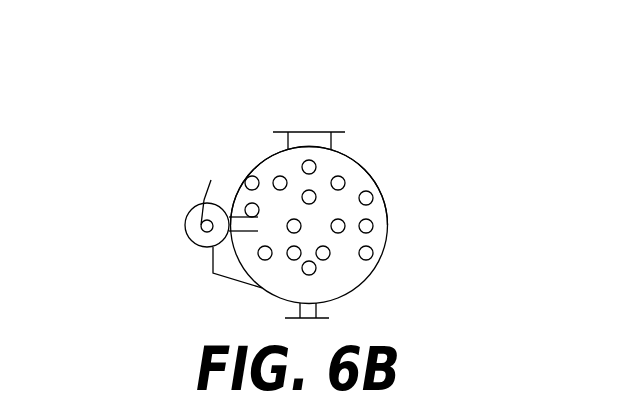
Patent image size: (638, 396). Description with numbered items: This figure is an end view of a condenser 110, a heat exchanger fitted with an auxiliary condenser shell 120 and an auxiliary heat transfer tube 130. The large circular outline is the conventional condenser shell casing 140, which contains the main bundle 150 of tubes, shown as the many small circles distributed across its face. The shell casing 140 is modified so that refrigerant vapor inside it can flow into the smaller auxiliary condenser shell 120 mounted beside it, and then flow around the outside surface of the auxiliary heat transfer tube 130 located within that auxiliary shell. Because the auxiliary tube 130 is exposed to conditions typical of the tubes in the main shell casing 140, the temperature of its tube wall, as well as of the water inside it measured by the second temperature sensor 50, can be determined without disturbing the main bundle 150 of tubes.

The second temperature sensor 50 is at (204, 188).
The condenser 110 is at (243, 139).
The auxiliary condenser shell 120 is at (203, 200).
The auxiliary heat transfer tube 130 is at (207, 228).
The condenser shell casing 140 is at (368, 168).
The main bundle of tubes 150 is at (325, 235).